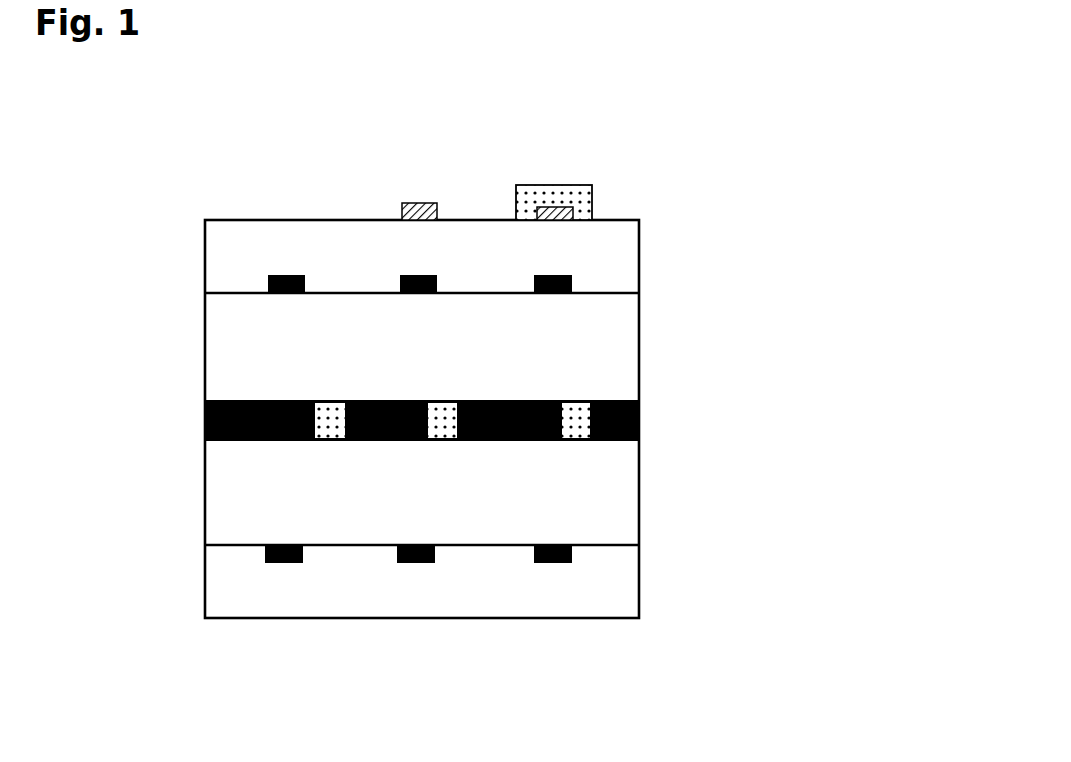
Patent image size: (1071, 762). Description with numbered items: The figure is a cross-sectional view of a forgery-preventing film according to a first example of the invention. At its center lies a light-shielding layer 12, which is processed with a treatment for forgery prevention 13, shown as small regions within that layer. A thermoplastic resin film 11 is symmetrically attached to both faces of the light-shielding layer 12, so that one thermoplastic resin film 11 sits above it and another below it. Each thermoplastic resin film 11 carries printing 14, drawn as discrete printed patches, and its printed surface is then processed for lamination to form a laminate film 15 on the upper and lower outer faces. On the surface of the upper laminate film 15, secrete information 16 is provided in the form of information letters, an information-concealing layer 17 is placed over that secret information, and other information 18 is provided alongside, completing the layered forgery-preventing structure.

The thermoplastic resin film 11 is at (610, 353).
The light-shielding layer 12 is at (639, 426).
The treatment for forgery prevention 13 is at (639, 407).
The printing 14 is at (572, 282).
The laminate film 15 is at (608, 248).
The secrete information 16 is at (592, 210).
The information-concealing layer 17 is at (575, 190).
The other information 18 is at (425, 207).